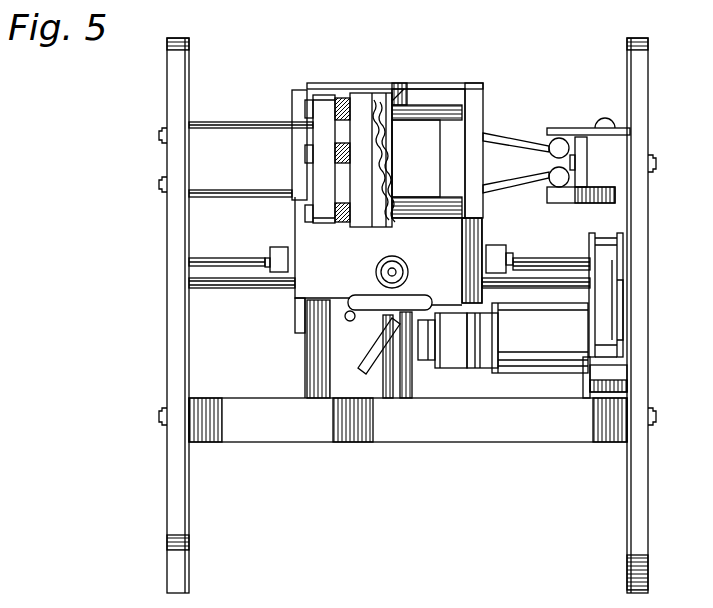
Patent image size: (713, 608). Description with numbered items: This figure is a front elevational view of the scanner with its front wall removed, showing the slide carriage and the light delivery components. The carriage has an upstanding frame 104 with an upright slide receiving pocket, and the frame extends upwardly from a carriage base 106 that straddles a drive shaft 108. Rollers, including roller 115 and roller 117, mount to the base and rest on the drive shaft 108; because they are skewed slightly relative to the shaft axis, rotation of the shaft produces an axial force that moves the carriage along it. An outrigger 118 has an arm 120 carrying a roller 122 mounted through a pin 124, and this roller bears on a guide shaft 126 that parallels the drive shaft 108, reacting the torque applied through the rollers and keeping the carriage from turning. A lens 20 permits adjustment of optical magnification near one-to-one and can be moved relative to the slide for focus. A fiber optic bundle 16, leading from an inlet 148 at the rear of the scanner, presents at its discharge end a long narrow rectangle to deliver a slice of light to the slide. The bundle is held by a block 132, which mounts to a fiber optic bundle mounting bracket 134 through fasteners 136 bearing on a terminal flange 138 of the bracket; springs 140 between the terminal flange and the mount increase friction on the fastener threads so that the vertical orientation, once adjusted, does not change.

The fiber optic bundle 16 is at (376, 118).
The lens 20 is at (479, 90).
The upstanding frame 104 is at (479, 214).
The carriage base 106 is at (302, 292).
The drive shaft 108 is at (562, 268).
The roller 115 is at (278, 246).
The roller 117 is at (503, 249).
The outrigger 118 is at (403, 262).
The arm 120 is at (374, 270).
The roller 122 is at (409, 274).
The pin 124 is at (519, 266).
The guide shaft 126 is at (364, 326).
The block 132 is at (379, 94).
The fiber optic bundle mounting bracket 134 is at (258, 172).
The fasteners 136 is at (302, 148).
The terminal flange 138 is at (322, 177).
The springs 140 is at (345, 224).
The inlet 148 is at (297, 330).